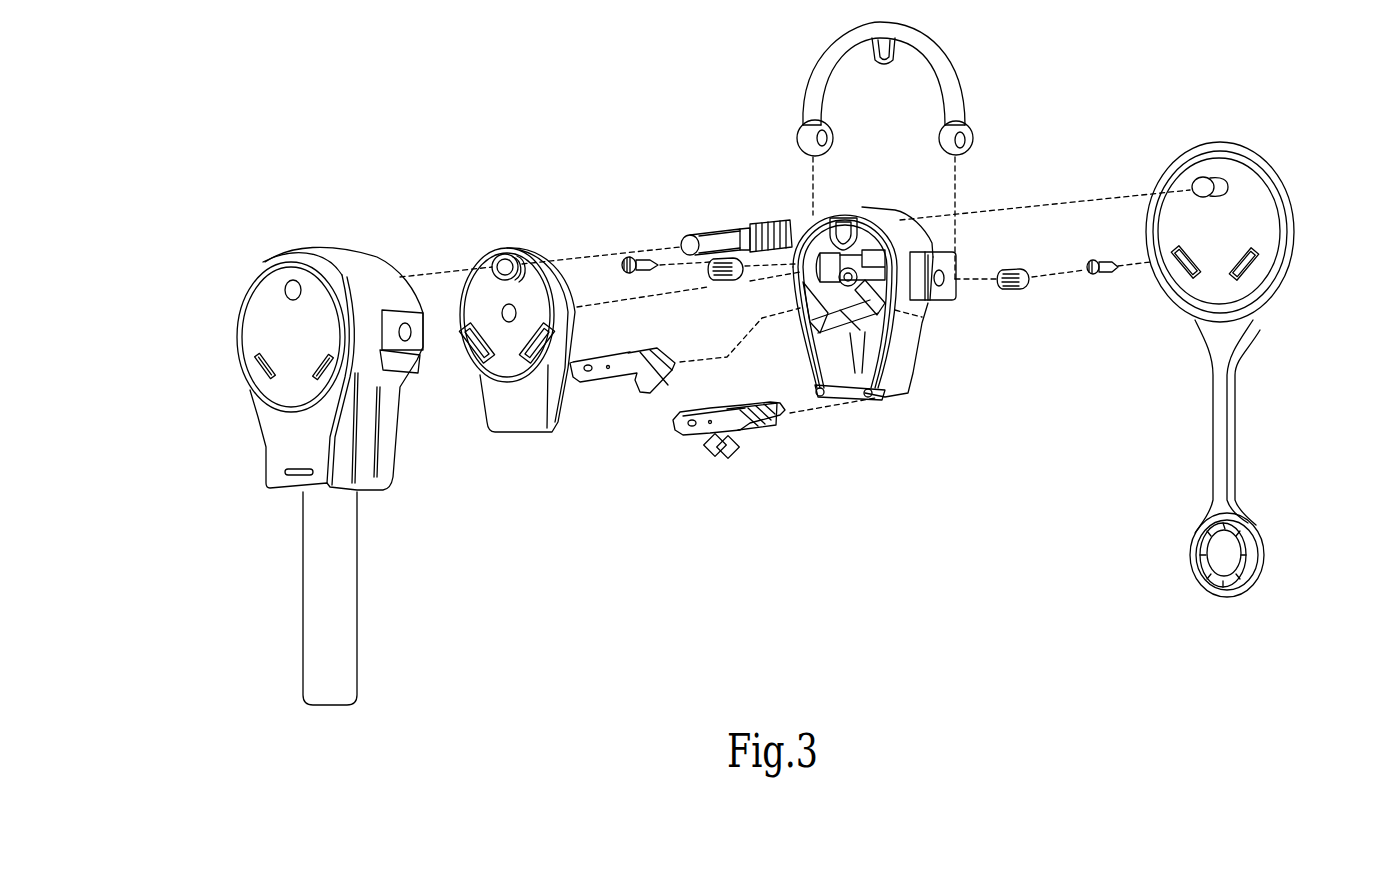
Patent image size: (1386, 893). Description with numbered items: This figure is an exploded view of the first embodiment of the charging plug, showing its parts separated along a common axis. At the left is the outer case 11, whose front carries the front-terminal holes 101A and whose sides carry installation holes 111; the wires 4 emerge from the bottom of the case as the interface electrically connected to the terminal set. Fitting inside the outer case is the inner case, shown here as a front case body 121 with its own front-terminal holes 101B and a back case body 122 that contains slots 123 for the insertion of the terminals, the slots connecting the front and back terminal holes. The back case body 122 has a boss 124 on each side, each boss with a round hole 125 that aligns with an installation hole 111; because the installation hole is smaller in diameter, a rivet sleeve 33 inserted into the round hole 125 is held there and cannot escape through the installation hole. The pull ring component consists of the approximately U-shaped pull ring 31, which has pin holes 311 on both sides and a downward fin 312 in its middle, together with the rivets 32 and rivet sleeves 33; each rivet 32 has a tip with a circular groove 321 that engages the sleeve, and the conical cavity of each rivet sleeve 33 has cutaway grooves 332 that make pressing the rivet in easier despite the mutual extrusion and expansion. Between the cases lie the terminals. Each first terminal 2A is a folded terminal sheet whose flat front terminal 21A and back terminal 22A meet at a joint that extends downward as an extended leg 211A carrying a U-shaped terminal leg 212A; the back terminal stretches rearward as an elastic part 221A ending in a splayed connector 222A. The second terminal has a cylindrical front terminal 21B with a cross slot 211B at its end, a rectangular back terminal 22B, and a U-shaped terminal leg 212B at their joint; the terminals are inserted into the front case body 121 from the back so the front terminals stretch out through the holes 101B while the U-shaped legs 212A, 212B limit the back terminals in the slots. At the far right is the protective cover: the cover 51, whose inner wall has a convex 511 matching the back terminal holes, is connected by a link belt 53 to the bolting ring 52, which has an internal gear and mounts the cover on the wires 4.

The outer case 11 is at (378, 463).
The front-terminal holes 101A is at (258, 365).
The installation holes 111 is at (405, 325).
The wires 4 is at (303, 578).
The front case body 121 is at (512, 418).
The front-terminal holes 101B is at (505, 254).
The rivets 32 is at (637, 257).
The circular groove 321 is at (643, 277).
The rivet sleeves 33 is at (710, 265).
The cutaway grooves 332 is at (722, 281).
The front terminal 21B is at (706, 233).
The cross slot 211B is at (683, 242).
The back terminal 22B is at (756, 226).
The U shaped terminal leg 212B is at (738, 226).
The first terminal 2A is at (608, 385).
The front terminal 21A is at (703, 435).
The extended leg 211A is at (730, 413).
The U shaped terminal leg 212A is at (720, 442).
The elastic part 221A is at (730, 436).
The back terminal 22A is at (814, 437).
The splayed connector 222A is at (783, 410).
The back case body 122 is at (902, 377).
The slots 123 is at (845, 217).
The bosses 124 is at (937, 300).
The round hole 125 is at (943, 263).
The pull ring 31 is at (947, 72).
The pin holes 311 is at (972, 142).
The downward fin 312 is at (884, 56).
The cover 51 is at (1268, 247).
The convex 511 is at (1248, 274).
The link belt 53 is at (1220, 433).
The bolting ring 52 is at (1250, 533).